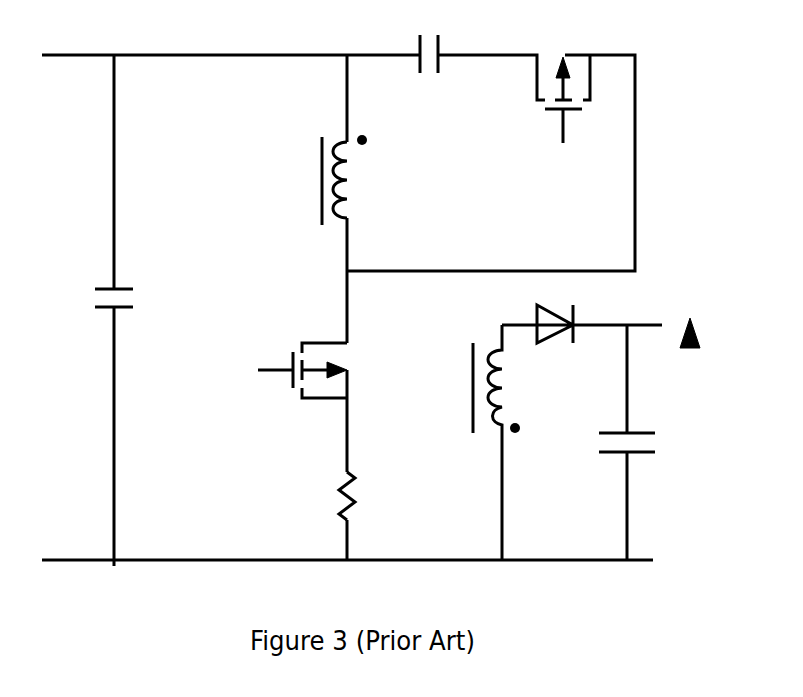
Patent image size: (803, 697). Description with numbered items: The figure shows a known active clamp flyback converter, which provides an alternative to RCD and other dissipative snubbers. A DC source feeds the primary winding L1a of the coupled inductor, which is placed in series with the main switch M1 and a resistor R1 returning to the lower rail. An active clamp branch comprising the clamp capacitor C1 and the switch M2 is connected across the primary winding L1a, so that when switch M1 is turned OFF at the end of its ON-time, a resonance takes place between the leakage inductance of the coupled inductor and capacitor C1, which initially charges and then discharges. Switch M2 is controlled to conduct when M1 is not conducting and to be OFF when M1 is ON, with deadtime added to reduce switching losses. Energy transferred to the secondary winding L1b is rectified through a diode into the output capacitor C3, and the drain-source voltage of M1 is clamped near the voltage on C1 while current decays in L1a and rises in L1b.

The DC input source capacitor DC is at (134, 310).
The clamp capacitor C1 is at (411, 71).
The switch M2 is at (563, 76).
The primary winding L1a is at (307, 180).
The switch M1 is at (325, 370).
The resistor R1 is at (371, 496).
The secondary winding L1b is at (525, 442).
The output capacitor C3 is at (615, 442).